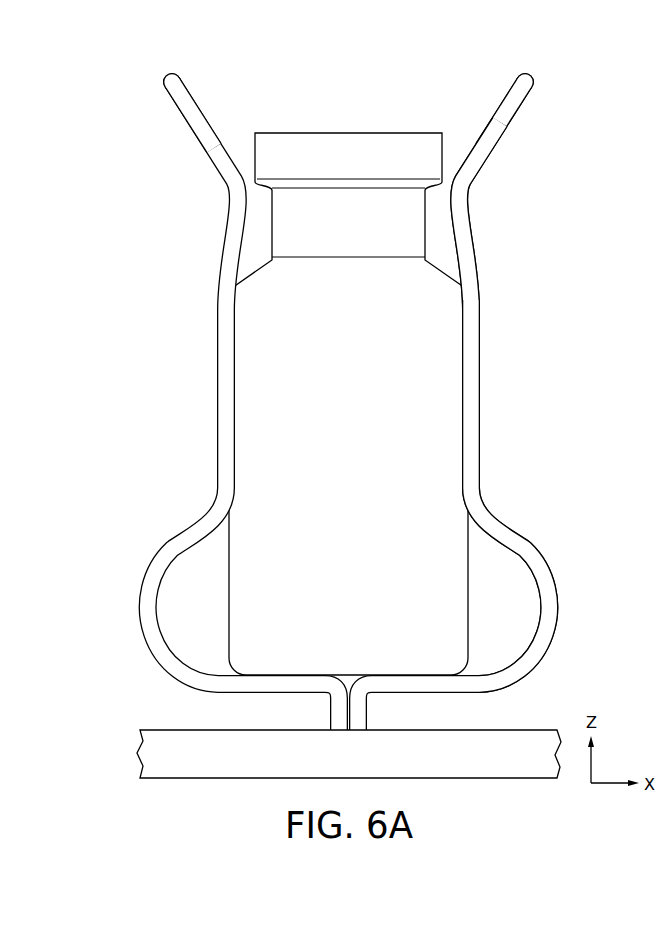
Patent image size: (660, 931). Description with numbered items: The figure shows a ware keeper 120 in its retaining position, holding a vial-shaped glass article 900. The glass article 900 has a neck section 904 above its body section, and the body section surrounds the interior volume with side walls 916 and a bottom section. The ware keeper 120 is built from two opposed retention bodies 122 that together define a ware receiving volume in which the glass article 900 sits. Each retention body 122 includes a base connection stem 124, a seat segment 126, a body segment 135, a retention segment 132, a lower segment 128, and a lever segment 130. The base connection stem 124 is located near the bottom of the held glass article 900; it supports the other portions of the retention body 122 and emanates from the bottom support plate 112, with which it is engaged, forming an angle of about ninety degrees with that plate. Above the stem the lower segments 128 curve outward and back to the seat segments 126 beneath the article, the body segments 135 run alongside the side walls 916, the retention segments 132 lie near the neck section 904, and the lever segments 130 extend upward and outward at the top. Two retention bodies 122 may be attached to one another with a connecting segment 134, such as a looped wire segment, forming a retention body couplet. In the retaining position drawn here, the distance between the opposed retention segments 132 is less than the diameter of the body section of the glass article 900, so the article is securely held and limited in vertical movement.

The bottom support plate 112 is at (507, 779).
The ware keeper 120 is at (369, 382).
The retention body 122 is at (216, 426).
The base connection stem 124 is at (368, 706).
The seat segment 126 is at (273, 696).
The lower segment 128 is at (558, 606).
The lever segment 130 is at (189, 128).
The retention segment 132 is at (459, 231).
The connecting segment 134 is at (527, 74).
The body segment 135 is at (482, 360).
The glass article 900 is at (403, 132).
The neck section 904 is at (272, 222).
The side walls 916 is at (229, 552).